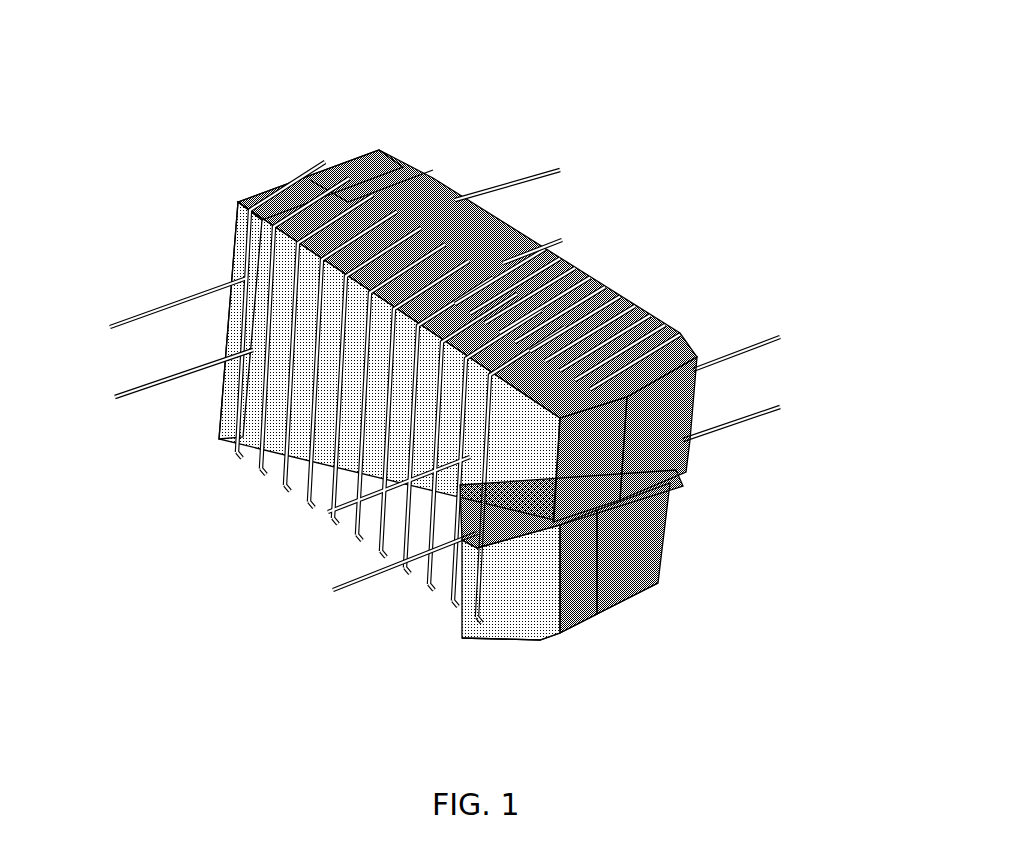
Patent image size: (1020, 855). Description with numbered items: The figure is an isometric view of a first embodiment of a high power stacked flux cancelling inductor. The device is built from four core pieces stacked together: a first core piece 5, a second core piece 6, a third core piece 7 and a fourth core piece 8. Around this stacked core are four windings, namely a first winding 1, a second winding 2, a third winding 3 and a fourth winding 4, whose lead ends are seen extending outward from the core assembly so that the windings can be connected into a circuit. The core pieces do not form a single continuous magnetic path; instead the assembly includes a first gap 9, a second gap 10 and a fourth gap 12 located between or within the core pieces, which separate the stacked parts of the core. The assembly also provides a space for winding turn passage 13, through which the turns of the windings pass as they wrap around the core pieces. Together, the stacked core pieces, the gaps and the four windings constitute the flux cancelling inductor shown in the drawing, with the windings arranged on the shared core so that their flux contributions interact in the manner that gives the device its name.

The first winding 1 is at (357, 520).
The second winding 2 is at (355, 595).
The third winding 3 is at (797, 333).
The fourth winding 4 is at (797, 403).
The first core piece 1A 5 is at (255, 257).
The second core piece 1B 6 is at (348, 200).
The third core piece 2A 7 is at (470, 593).
The fourth core piece 2B 8 is at (623, 563).
The first gap 9 is at (327, 178).
The second gap 10 is at (630, 460).
The fourth gap 12 is at (592, 627).
The space for winding turn passage 13 is at (680, 478).